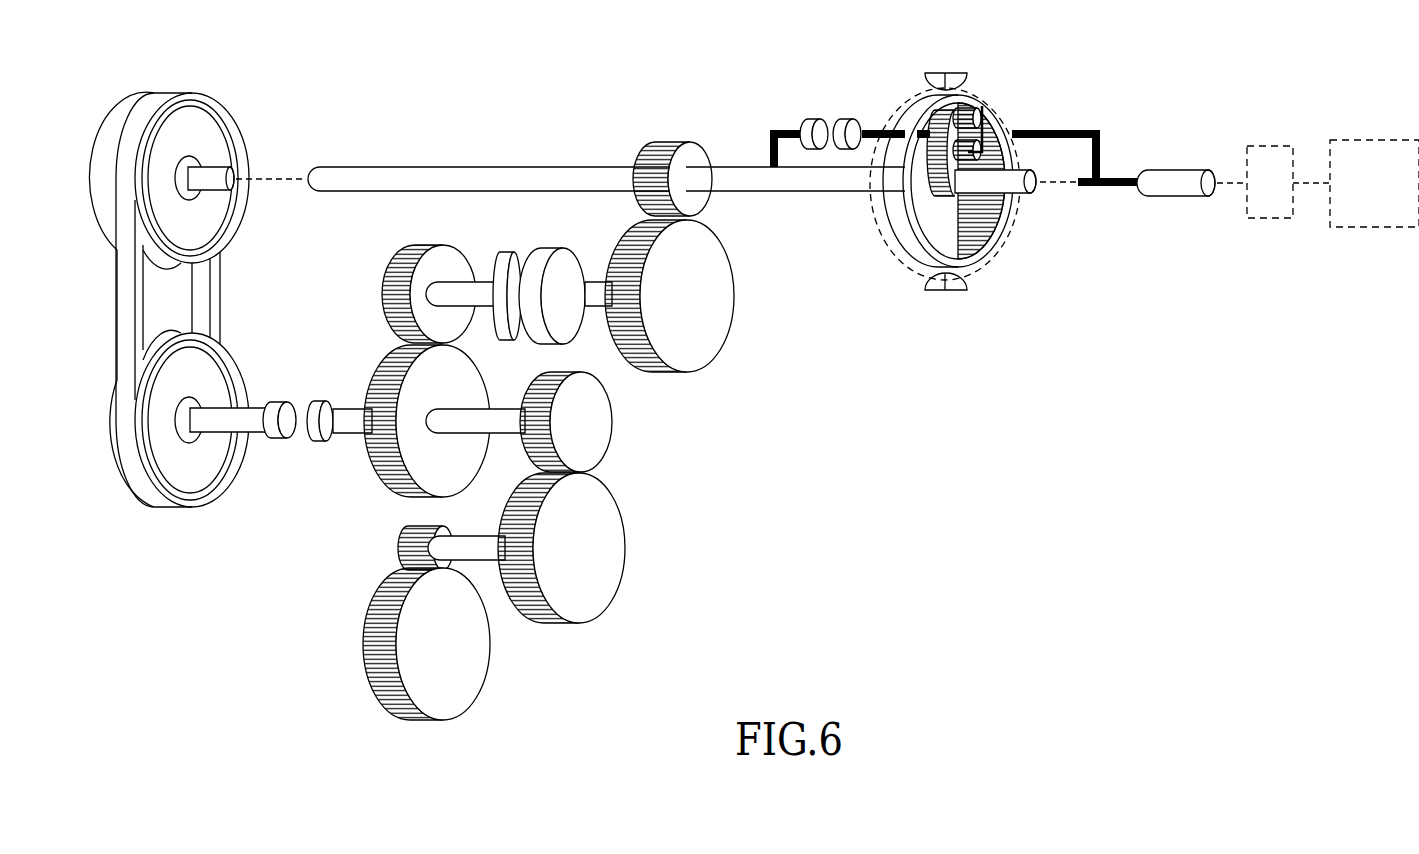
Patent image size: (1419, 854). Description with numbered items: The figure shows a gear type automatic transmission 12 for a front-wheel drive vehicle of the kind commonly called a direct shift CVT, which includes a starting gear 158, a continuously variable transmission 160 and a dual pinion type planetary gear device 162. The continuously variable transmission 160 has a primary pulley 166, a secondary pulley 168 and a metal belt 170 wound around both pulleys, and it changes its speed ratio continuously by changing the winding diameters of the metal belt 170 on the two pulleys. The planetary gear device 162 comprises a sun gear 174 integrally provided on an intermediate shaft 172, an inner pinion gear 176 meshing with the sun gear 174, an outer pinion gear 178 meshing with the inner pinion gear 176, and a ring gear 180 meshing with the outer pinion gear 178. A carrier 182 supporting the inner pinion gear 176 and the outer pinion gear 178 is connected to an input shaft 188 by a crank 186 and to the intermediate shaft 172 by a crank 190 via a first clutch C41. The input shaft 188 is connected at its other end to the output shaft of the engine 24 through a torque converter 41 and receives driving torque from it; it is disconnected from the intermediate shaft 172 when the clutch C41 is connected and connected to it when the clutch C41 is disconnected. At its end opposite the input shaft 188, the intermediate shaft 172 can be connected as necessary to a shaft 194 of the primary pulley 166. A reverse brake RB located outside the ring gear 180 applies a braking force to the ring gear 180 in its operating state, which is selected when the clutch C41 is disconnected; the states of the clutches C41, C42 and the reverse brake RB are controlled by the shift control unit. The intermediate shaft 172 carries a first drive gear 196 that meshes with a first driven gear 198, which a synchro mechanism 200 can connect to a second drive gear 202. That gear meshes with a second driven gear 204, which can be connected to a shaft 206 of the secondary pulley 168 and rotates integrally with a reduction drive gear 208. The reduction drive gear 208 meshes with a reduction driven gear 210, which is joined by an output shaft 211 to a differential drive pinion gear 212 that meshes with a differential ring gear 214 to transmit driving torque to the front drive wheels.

The gear type automatic transmission 12 is at (1090, 37).
The engine 24 is at (1375, 140).
The torque converter 41 is at (1270, 146).
The starting gear 158 is at (495, 418).
The continuously variable transmission 160 is at (176, 302).
The planetary gear device 162 is at (970, 182).
The primary pulley 166 is at (186, 120).
The secondary pulley 168 is at (192, 483).
The metal belt 170 is at (126, 296).
The intermediate shaft 172 is at (570, 172).
The sun gear 174 is at (937, 197).
The inner pinion gear 176 is at (926, 147).
The outer pinion gear 178 is at (974, 103).
The ring gear 180 is at (1018, 207).
The carrier 182 is at (1000, 122).
The crank 186 is at (1100, 138).
The input shaft 188 is at (1170, 190).
The crank 190 is at (772, 126).
The shaft of the primary pulley 194 is at (208, 174).
The No. 1 drive gear 196 is at (672, 141).
The No. 1 driven gear 198 is at (724, 294).
The synchro mechanism 200 is at (567, 248).
The No. 2 drive gear 202 is at (388, 278).
The No. 2 driven gear 204 is at (381, 369).
The shaft of the secondary pulley 206 is at (254, 409).
The reduction drive gear 208 is at (604, 422).
The reduction driven gear 210 is at (614, 549).
The output shaft 211 is at (487, 553).
The differential drive pinion gear 212 is at (402, 551).
The differential ring gear 214 is at (368, 641).
The No. 1 clutch C41 is at (817, 117).
The clutch C42 is at (278, 441).
The reverse brake RB is at (942, 72).